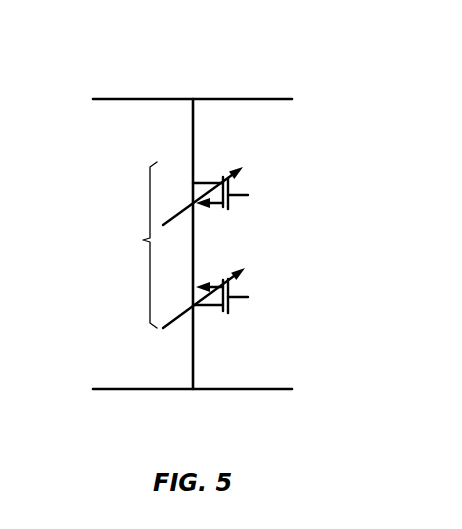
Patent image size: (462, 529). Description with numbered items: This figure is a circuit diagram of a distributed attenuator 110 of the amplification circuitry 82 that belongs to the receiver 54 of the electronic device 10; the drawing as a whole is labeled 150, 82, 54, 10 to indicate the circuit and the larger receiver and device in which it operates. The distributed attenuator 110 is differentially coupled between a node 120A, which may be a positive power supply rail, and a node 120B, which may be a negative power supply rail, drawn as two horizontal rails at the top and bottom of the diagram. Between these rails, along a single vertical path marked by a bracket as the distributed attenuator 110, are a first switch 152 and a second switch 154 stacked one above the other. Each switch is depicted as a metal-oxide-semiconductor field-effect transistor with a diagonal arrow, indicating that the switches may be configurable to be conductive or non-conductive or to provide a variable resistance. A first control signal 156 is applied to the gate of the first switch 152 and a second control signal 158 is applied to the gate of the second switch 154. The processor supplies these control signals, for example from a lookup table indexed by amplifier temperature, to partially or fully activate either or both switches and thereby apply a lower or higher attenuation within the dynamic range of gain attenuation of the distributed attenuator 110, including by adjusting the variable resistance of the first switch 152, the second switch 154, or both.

The switching circuit 150 is at (257, 202).
The amplification circuitry 82 is at (191, 225).
The receiver 54 is at (191, 225).
The electronic device 10 is at (191, 225).
The node 120A is at (112, 98).
The node 120B is at (112, 388).
The distributed attenuator 110 is at (186, 260).
The first switch 152 is at (222, 210).
The second switch 154 is at (223, 313).
The first control signal 156 is at (242, 199).
The second control signal 158 is at (226, 312).